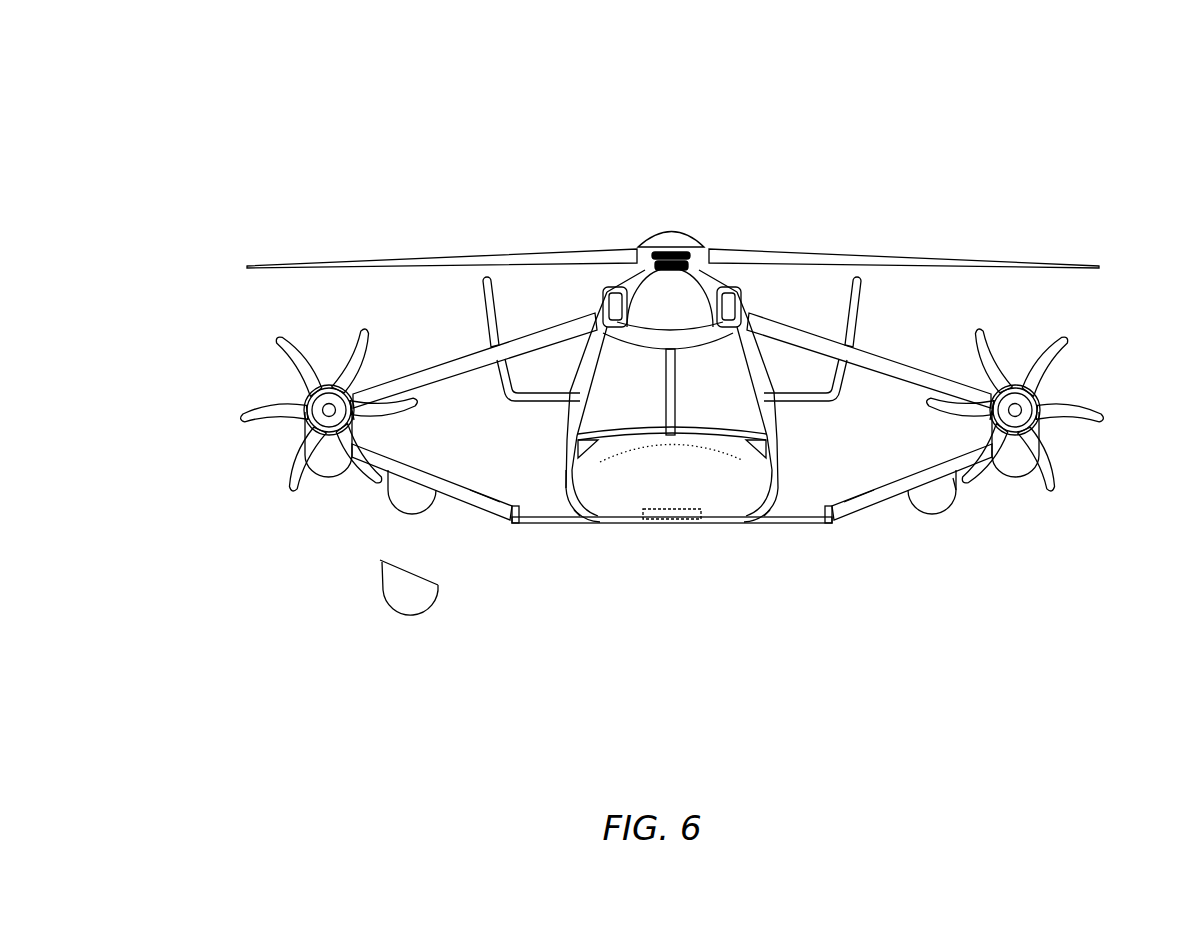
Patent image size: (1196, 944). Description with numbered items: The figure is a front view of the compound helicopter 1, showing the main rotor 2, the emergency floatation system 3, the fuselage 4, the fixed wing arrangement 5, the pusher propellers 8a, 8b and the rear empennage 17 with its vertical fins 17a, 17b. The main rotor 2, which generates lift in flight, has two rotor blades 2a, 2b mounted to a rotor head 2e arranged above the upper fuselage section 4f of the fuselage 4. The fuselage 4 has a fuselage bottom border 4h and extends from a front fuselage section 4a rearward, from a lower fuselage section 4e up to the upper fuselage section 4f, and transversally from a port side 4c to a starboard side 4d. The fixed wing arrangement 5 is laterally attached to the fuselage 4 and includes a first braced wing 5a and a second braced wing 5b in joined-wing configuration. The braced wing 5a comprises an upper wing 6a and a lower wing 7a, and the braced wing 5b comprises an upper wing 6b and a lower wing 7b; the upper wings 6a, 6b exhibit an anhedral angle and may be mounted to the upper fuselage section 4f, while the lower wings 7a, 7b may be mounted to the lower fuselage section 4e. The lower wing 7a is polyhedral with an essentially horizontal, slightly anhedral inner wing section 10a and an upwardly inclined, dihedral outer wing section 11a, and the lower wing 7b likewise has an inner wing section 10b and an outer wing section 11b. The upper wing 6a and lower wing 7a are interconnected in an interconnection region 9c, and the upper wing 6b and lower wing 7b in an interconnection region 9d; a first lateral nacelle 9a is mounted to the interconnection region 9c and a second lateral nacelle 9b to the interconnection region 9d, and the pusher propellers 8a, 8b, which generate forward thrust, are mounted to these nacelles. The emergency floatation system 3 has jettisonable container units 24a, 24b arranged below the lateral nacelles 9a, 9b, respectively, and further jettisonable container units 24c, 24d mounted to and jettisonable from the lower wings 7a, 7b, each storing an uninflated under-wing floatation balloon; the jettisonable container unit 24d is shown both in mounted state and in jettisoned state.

The compound helicopter 1 is at (388, 135).
The main rotor 2 is at (876, 238).
The rotor blade 2a is at (262, 266).
The rotor blade 2b is at (1043, 266).
The rotor head 2e is at (690, 212).
The emergency floatation system 3 is at (960, 503).
The fuselage 4 is at (712, 510).
The front fuselage section 4a is at (581, 500).
The port side 4c is at (783, 436).
The starboard side 4d is at (563, 438).
The lower fuselage section 4e is at (672, 528).
The upper fuselage section 4f is at (752, 308).
The fuselage bottom border 4h is at (620, 490).
The fixed wing arrangement 5 is at (408, 325).
The first braced wing 5a is at (880, 342).
The second braced wing 5b is at (473, 340).
The upper wing 6a is at (924, 380).
The upper wing 6b is at (423, 375).
The lower wing 7a is at (880, 480).
The lower wing 7b is at (462, 478).
The first propeller 8a is at (1065, 355).
The second propeller 8b is at (276, 350).
The first lateral nacelle 9a is at (1040, 389).
The second lateral nacelle 9b is at (302, 391).
The interconnection region 9c is at (990, 427).
The interconnection region 9d is at (355, 423).
The inner wing section 10a is at (815, 523).
The inner wing section 10b is at (530, 522).
The outer wing section 11a is at (859, 492).
The outer wing section 11b is at (482, 492).
The rear empennage 17 is at (531, 377).
The vertical fin 17a is at (861, 302).
The vertical fin 17b is at (496, 300).
The jettisonable container unit 24a is at (1020, 480).
The jettisonable container unit 24b is at (317, 475).
The jettisonable container unit 24c is at (938, 516).
The jettisonable container unit 24d is at (388, 505).